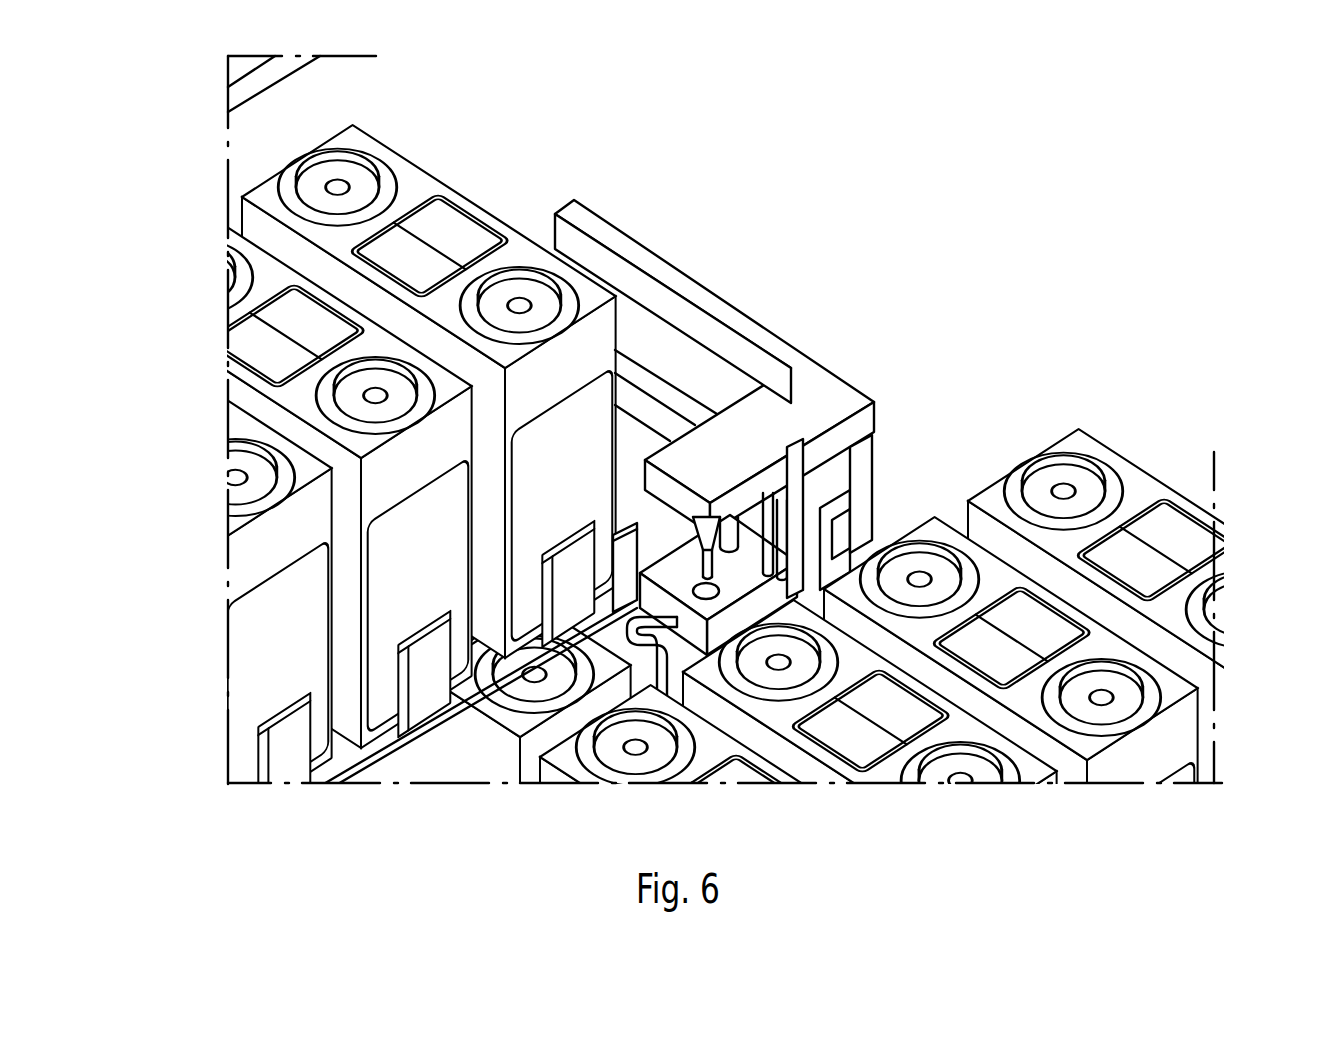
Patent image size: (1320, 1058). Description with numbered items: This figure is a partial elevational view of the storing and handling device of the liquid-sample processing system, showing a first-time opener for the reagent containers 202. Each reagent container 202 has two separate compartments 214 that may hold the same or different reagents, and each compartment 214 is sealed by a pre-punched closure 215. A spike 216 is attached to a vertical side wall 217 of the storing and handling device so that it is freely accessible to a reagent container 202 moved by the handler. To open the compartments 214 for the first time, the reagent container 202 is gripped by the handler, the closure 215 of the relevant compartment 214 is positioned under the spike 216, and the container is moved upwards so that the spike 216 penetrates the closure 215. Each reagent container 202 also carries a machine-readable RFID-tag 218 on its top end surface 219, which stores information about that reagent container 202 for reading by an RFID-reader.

The reagent container 202 is at (284, 243).
The compartment 214 is at (936, 528).
The pre-punched closure 215 is at (341, 183).
The spike 216 is at (707, 562).
The vertical side wall 217 is at (700, 292).
The RFID-tag 218 is at (1178, 531).
The top end surface 219 is at (1079, 445).